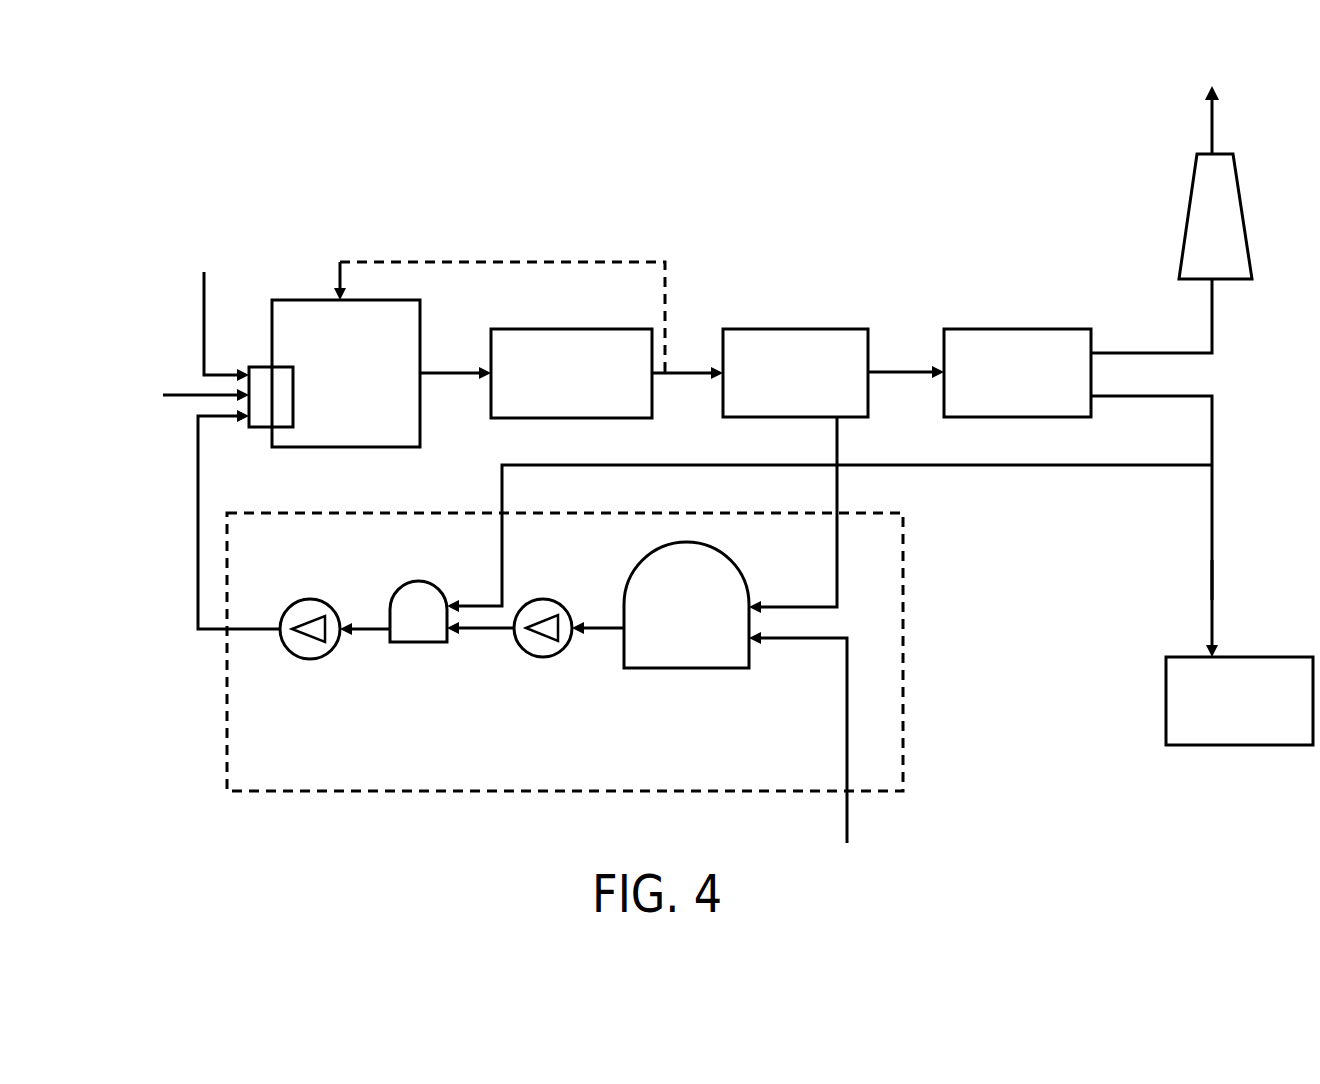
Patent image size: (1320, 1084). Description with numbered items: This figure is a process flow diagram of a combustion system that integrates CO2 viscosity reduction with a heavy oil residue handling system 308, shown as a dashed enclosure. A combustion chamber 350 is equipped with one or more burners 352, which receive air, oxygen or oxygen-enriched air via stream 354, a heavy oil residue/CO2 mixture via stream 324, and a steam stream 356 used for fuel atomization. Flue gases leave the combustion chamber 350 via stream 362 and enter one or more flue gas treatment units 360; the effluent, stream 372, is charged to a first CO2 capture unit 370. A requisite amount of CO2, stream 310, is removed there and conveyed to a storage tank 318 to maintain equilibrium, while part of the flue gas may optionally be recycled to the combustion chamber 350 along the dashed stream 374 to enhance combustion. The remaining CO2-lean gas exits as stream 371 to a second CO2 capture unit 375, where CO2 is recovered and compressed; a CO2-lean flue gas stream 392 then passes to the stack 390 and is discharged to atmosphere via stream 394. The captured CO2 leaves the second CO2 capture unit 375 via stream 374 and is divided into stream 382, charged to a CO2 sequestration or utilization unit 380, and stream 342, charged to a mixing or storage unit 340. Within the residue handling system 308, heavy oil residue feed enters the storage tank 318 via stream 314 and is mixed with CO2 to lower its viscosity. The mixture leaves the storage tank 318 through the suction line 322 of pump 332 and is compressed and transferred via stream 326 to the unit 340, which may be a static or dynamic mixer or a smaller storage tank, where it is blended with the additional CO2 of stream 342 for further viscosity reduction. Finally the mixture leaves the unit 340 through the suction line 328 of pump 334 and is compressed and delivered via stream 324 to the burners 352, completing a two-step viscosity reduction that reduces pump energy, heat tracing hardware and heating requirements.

The residue handling system 308 is at (227, 676).
The CO2 stream 310 is at (838, 483).
The heavy oil residue feed stream 314 is at (847, 720).
The storage tank 318 is at (686, 605).
The suction line 322 is at (604, 628).
The heavy oil residue/CO2 mixture stream 324 is at (198, 500).
The heavy oil residue/CO2 mixture stream 326 is at (497, 629).
The suction line 328 is at (370, 629).
The pump 332 is at (548, 658).
The pump 334 is at (315, 660).
The mixing or storage unit 340 is at (418, 611).
The CO2 stream 342 is at (700, 465).
The combustion chamber 350 is at (346, 373).
The burner 352 is at (263, 367).
The air stream 354 is at (204, 300).
The steam stream 356 is at (190, 395).
The flue gas treatment unit 360 is at (571, 373).
The flue gas stream 362 is at (467, 373).
The first CO2 capture unit 370 is at (795, 373).
The CO2-lean flue gas stream 371 is at (922, 372).
The effluent flue gas stream 372 is at (700, 373).
The recycle flue gas stream / captured CO2 stream 374 is at (577, 262).
The second CO2 capture unit 375 is at (1017, 373).
The CO2 sequestration or utilization unit 380 is at (1239, 701).
The CO2 stream 382 is at (1212, 598).
The stack 390 is at (1188, 218).
The CO2-lean flue gas stream 392 is at (1148, 353).
The discharge stream 394 is at (1212, 130).